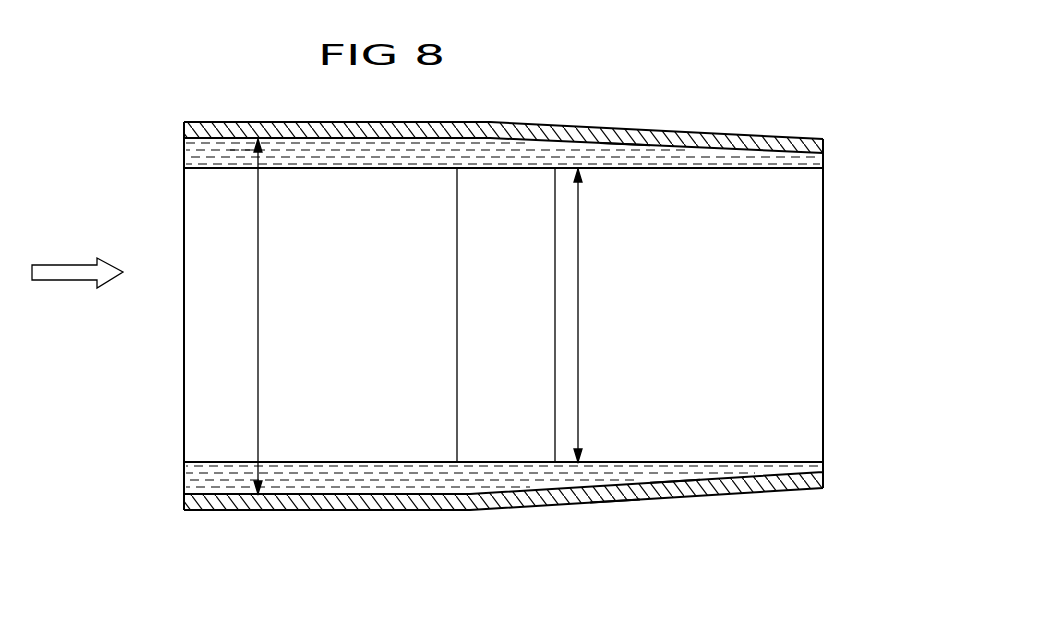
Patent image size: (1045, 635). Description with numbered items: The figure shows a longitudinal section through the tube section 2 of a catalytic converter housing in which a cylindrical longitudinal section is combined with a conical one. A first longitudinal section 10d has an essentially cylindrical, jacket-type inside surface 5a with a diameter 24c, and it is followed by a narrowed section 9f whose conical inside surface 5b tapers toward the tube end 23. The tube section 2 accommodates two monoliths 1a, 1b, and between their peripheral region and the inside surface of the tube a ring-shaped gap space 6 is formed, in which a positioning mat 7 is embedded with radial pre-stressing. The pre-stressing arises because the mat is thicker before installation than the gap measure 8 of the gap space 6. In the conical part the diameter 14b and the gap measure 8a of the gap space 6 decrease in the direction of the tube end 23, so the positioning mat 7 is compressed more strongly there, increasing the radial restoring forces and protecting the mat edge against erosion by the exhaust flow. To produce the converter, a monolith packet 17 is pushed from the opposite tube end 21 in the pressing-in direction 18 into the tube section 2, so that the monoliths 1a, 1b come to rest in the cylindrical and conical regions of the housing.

The monolith 1a is at (778, 312).
The monolith 1b is at (220, 410).
The tube section 2 is at (308, 508).
The cylindrical inside surface 5a is at (309, 146).
The conical inside surface 5b is at (627, 150).
The gap space 6 is at (217, 157).
The positioning mat 7 is at (508, 160).
The gap measure 8 is at (184, 170).
The gap measure 8a is at (717, 82).
The narrowed section 9f is at (612, 497).
The first longitudinal section 10d is at (213, 508).
The diameter 14b is at (578, 300).
The monolith packet 17 is at (670, 462).
The pressing-in direction 18 is at (68, 270).
The tube end 21 is at (185, 307).
The tube end 23 is at (823, 383).
The diameter 24c is at (258, 288).